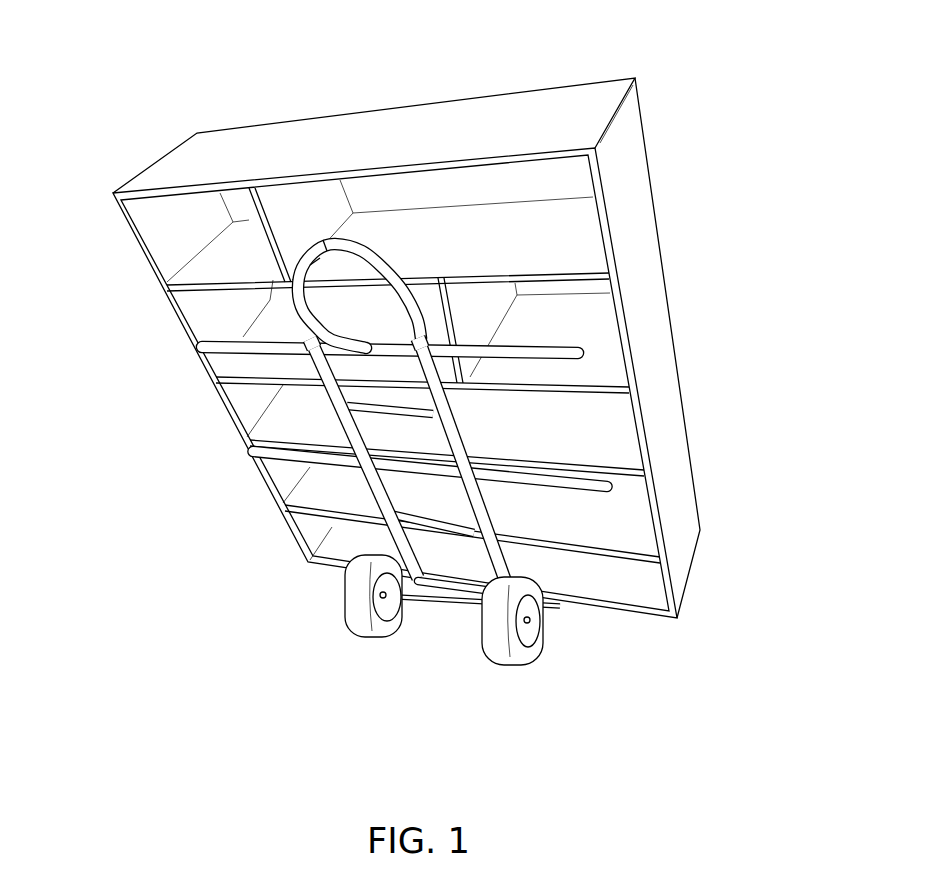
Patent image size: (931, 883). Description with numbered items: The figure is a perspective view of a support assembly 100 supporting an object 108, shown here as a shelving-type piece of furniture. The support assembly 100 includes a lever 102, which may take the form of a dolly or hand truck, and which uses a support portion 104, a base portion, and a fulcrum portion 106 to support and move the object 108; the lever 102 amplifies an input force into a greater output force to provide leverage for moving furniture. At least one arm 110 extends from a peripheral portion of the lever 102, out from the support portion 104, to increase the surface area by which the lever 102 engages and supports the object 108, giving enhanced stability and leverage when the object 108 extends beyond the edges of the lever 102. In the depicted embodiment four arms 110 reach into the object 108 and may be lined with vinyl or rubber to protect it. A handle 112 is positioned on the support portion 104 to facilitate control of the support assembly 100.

The support assembly 100 is at (354, 370).
The lever 102 is at (467, 595).
The support portion 104 is at (386, 262).
The fulcrum portion 106 is at (540, 632).
The object 108 is at (637, 190).
The arm 110 is at (577, 343).
The handle 112 is at (303, 300).